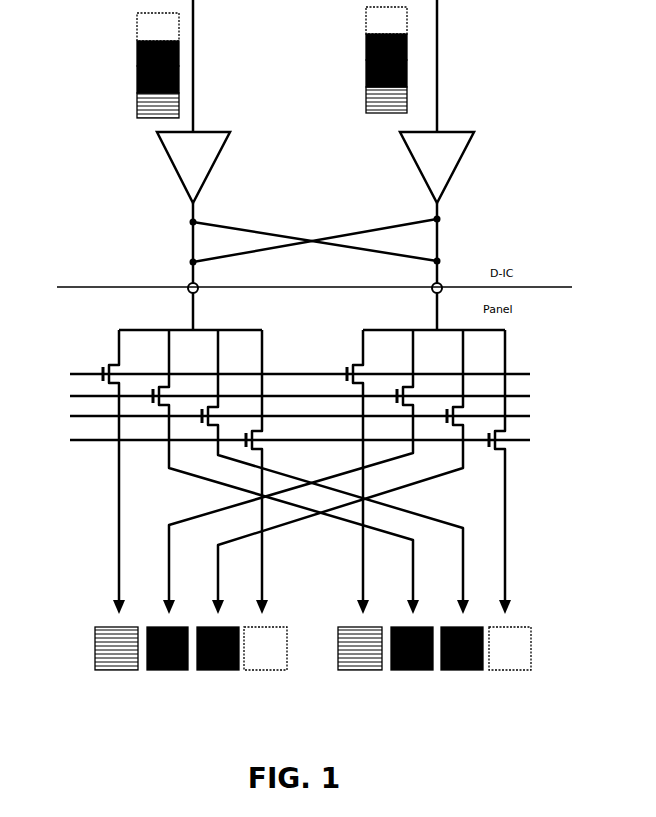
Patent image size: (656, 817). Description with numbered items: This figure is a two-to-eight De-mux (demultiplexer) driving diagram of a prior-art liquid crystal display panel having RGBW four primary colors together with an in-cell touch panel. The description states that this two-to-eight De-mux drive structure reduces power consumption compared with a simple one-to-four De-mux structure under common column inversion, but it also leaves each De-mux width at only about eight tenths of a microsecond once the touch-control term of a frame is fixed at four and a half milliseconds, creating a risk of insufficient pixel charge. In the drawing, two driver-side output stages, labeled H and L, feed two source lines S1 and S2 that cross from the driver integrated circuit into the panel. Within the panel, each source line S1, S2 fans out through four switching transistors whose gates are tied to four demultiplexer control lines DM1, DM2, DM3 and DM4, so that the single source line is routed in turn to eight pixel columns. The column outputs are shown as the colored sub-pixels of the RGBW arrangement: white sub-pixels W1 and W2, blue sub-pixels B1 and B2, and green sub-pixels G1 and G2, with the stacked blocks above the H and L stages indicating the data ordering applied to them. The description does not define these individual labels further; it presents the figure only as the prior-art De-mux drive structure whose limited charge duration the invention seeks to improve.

The white sub-pixel 1 / data W1 is at (212, 341).
The white sub-pixel 2 / data W2 is at (448, 338).
The blue sub-pixel 1 / data B1 is at (277, 365).
The blue sub-pixel 2 / data B2 is at (276, 368).
The green sub-pixel 1 / data G1 is at (137, 381).
The green sub-pixel 2 / data G2 is at (372, 378).
The high (positive) output amplifier H is at (184, 167).
The low (negative) output amplifier L is at (429, 167).
The source line 1 S1 is at (190, 311).
The source line 2 S2 is at (434, 311).
The demultiplexer control line 1 DM1 is at (281, 374).
The demultiplexer control line 2 DM2 is at (281, 396).
The demultiplexer control line 3 DM3 is at (281, 416).
The demultiplexer control line 4 DM4 is at (281, 440).